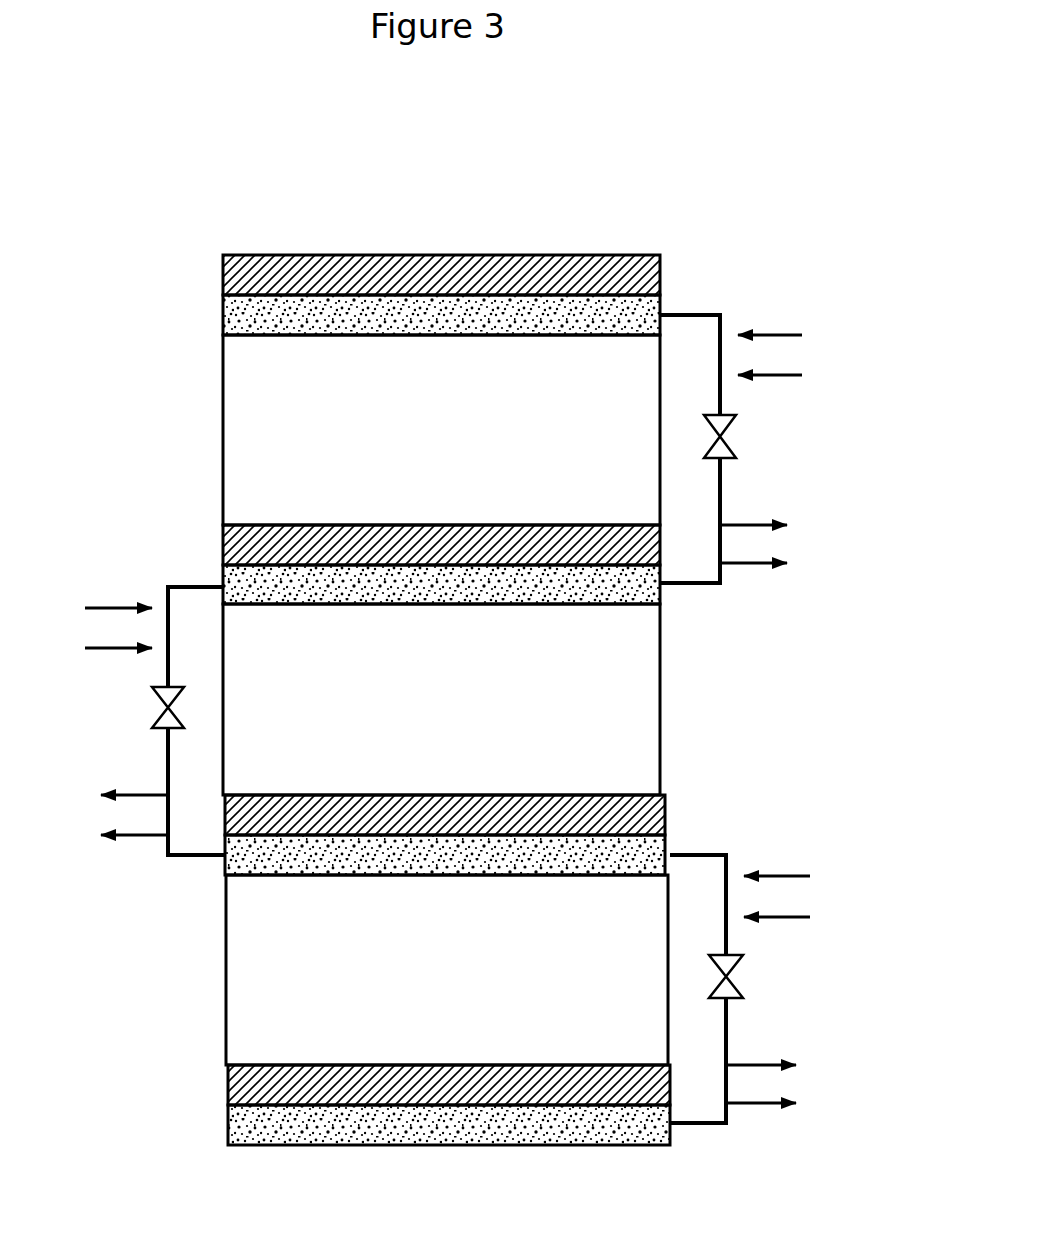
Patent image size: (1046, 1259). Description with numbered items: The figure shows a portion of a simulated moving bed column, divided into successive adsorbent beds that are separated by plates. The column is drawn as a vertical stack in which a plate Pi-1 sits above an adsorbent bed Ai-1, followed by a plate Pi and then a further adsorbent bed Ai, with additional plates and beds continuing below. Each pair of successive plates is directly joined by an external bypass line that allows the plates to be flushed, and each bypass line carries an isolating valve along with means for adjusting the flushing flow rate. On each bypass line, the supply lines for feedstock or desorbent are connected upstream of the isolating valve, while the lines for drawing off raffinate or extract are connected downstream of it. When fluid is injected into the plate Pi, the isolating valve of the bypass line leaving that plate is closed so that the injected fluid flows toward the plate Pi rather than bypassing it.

The plate Pi-1 is at (441, 314).
The plate Pi is at (441, 584).
The adsorbent bed Ai-1 is at (441, 430).
The adsorbent bed Ai is at (441, 699).